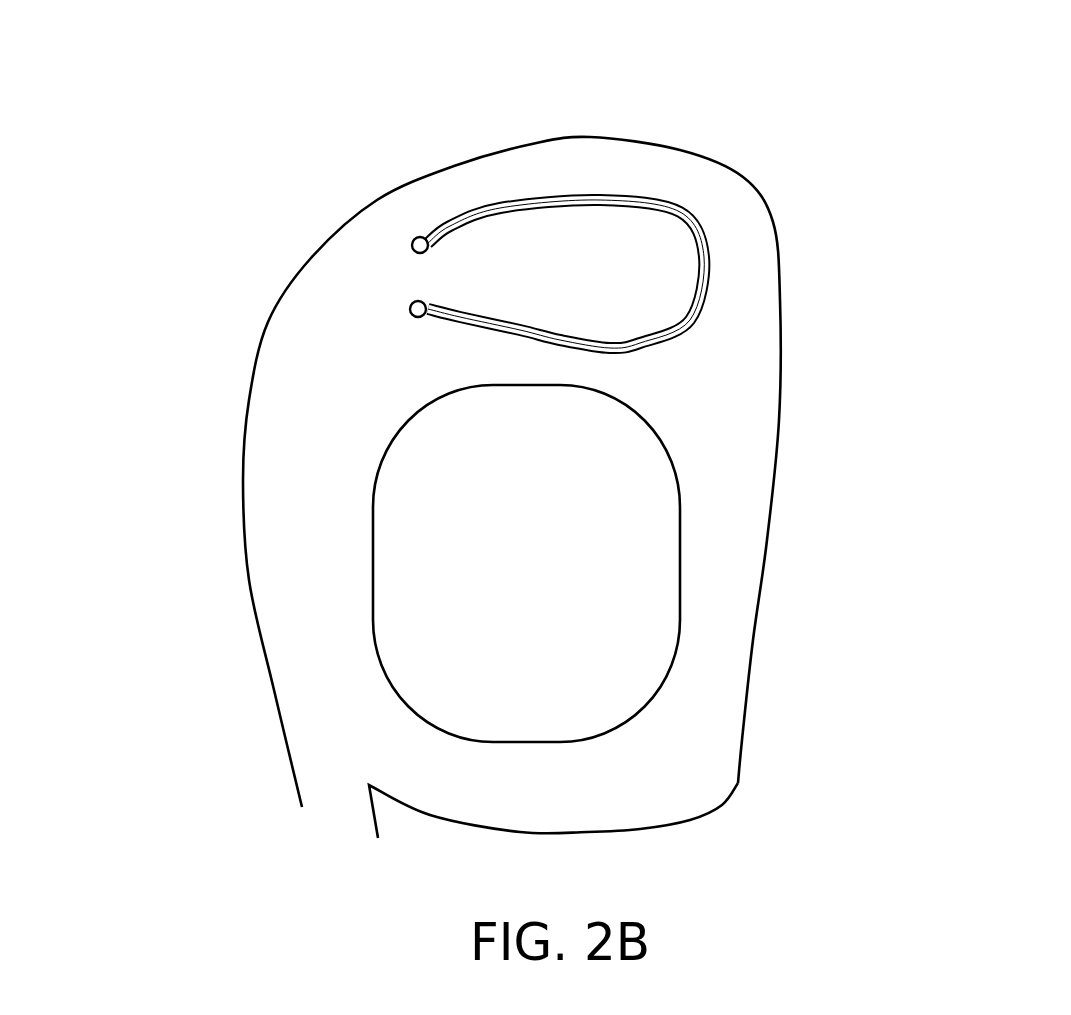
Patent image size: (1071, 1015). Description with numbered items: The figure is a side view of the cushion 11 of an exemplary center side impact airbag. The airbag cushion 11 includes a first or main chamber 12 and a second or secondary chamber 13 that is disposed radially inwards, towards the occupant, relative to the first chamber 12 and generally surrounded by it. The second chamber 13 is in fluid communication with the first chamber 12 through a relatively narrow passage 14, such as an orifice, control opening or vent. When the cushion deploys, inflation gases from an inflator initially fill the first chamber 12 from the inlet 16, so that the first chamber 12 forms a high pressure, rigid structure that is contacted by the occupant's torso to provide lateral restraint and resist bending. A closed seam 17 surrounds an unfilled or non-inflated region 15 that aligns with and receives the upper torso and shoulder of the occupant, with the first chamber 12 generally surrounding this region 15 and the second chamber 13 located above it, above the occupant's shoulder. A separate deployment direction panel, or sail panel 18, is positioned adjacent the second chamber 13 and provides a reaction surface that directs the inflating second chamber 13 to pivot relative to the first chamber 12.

The cushion 11 is at (270, 91).
The first chamber 12 is at (297, 397).
The second chamber 13 is at (653, 273).
The passage 14 is at (415, 272).
The non-inflated region 15 is at (402, 520).
The inlet 16 is at (327, 804).
The closed seam 17 is at (658, 438).
The sail panel 18 is at (697, 292).